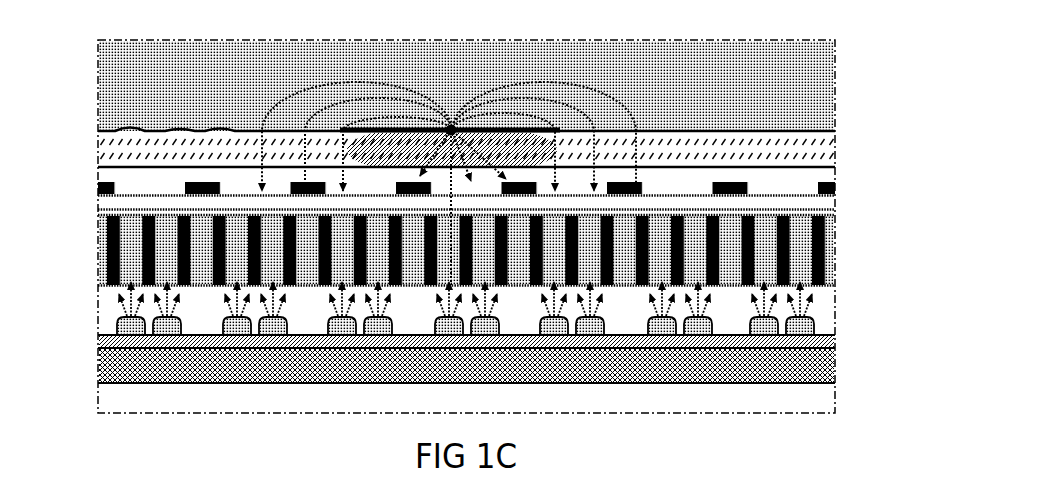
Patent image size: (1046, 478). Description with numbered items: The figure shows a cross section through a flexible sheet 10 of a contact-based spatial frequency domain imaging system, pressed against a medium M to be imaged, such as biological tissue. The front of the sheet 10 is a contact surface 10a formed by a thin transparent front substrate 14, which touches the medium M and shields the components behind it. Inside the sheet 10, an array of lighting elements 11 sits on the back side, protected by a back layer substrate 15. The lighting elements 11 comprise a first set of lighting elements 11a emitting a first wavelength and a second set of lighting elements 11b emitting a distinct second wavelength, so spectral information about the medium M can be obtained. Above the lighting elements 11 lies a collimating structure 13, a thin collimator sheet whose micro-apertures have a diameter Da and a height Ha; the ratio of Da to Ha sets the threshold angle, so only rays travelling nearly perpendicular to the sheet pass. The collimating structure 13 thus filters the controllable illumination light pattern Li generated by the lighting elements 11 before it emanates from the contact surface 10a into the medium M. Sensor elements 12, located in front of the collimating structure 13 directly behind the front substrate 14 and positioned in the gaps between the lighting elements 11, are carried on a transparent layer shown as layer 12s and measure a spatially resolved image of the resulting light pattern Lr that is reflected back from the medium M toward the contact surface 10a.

The sheet 10 is at (73, 133).
The contact surface 10a is at (838, 133).
The lighting elements 11 is at (504, 331).
The first set of lighting elements 11a is at (240, 336).
The second set of lighting elements 11b is at (272, 336).
The sensor elements 12 is at (846, 190).
The surface of layer 12 12s is at (846, 206).
The collimating structure 13 is at (846, 260).
The front substrate 14 is at (846, 153).
The back layer substrate 15 is at (846, 367).
The medium M is at (213, 100).
The resulting light pattern Lr is at (298, 159).
The illumination light pattern Li is at (442, 177).
The aperture diameter Da is at (167, 215).
The aperture height Ha is at (90, 218).